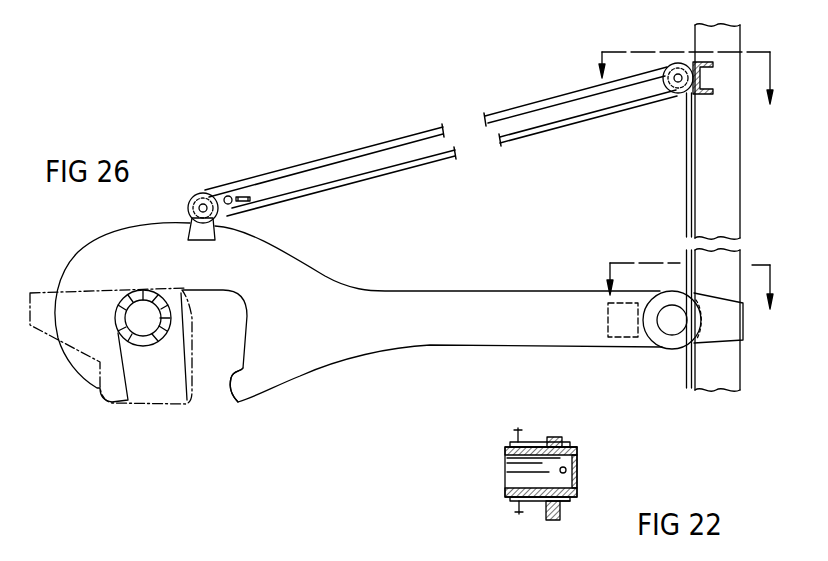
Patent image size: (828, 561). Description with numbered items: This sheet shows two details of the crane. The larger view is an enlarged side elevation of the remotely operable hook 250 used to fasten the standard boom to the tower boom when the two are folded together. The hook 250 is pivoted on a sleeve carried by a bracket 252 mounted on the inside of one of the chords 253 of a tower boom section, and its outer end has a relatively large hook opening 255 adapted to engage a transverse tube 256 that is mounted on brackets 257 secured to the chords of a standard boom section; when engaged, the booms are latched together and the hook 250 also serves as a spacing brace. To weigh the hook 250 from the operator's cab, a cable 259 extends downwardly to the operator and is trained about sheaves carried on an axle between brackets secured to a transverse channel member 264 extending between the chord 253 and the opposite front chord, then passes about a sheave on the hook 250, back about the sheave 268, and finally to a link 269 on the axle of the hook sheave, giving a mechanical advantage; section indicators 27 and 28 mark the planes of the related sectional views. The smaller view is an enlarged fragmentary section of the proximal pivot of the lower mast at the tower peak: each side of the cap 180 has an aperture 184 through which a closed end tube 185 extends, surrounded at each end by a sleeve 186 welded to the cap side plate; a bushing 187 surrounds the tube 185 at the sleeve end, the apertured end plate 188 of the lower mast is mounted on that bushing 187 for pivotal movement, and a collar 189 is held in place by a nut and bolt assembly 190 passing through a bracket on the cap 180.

In FIG. 26, the hook 250 is at (422, 291).
In FIG. 26, the bracket 252 is at (743, 325).
In FIG. 26, the chord 253 is at (740, 163).
In FIG. 26, the hook opening 255 is at (230, 372).
In FIG. 26, the transverse tube 256 is at (153, 346).
In FIG. 26, the brackets 257 is at (100, 288).
In FIG. 26, the cable 259 is at (686, 192).
In FIG. 26, the transverse channel member 264 is at (703, 78).
In FIG. 26, the sheave 268 is at (679, 94).
In FIG. 26, the link 269 is at (228, 195).
In FIG. 26, the section line 27- 27 is at (688, 59).
In FIG. 26, the section line 28- 28 is at (690, 266).
In FIG. 22, the cap 180 is at (517, 505).
In FIG. 22, the aperture 184 is at (516, 436).
In FIG. 22, the closed end tube 185 is at (508, 468).
In FIG. 22, the sleeve 186 is at (548, 440).
In FIG. 22, the bushing 187 is at (548, 505).
In FIG. 22, the apertured end plate 188 is at (562, 510).
In FIG. 22, the collar 189 is at (569, 445).
In FIG. 22, the nut and bolt assembly 190 is at (566, 469).